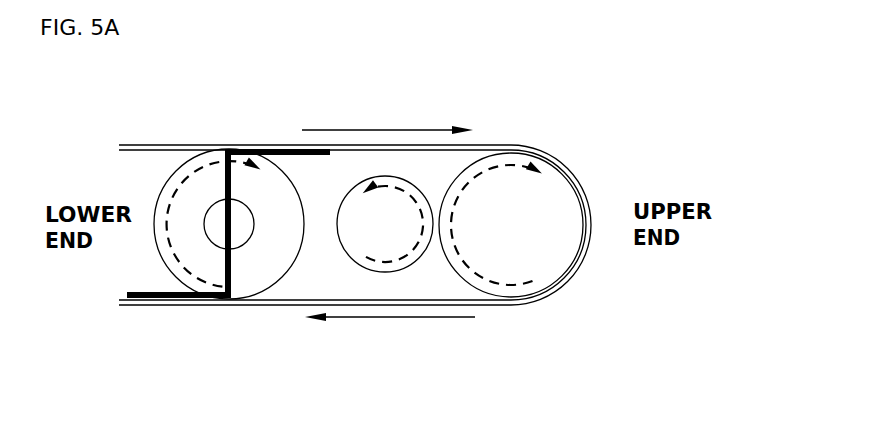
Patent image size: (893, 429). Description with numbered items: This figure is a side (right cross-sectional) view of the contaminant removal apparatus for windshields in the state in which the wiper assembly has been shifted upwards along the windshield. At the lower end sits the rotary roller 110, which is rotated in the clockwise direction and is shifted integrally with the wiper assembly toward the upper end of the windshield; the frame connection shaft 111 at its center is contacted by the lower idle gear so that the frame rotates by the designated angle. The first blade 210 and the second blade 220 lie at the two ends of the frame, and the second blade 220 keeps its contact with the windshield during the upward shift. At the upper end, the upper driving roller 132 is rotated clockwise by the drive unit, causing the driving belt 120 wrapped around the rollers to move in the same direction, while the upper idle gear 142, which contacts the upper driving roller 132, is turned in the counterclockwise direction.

The rotary roller 110 is at (257, 270).
The frame connection shaft 111 is at (215, 218).
The driving belt 120 is at (483, 305).
The upper driving roller 132 is at (540, 257).
The upper idle gear 142 is at (414, 178).
The first blade 210 is at (285, 149).
The second blade 220 is at (153, 301).